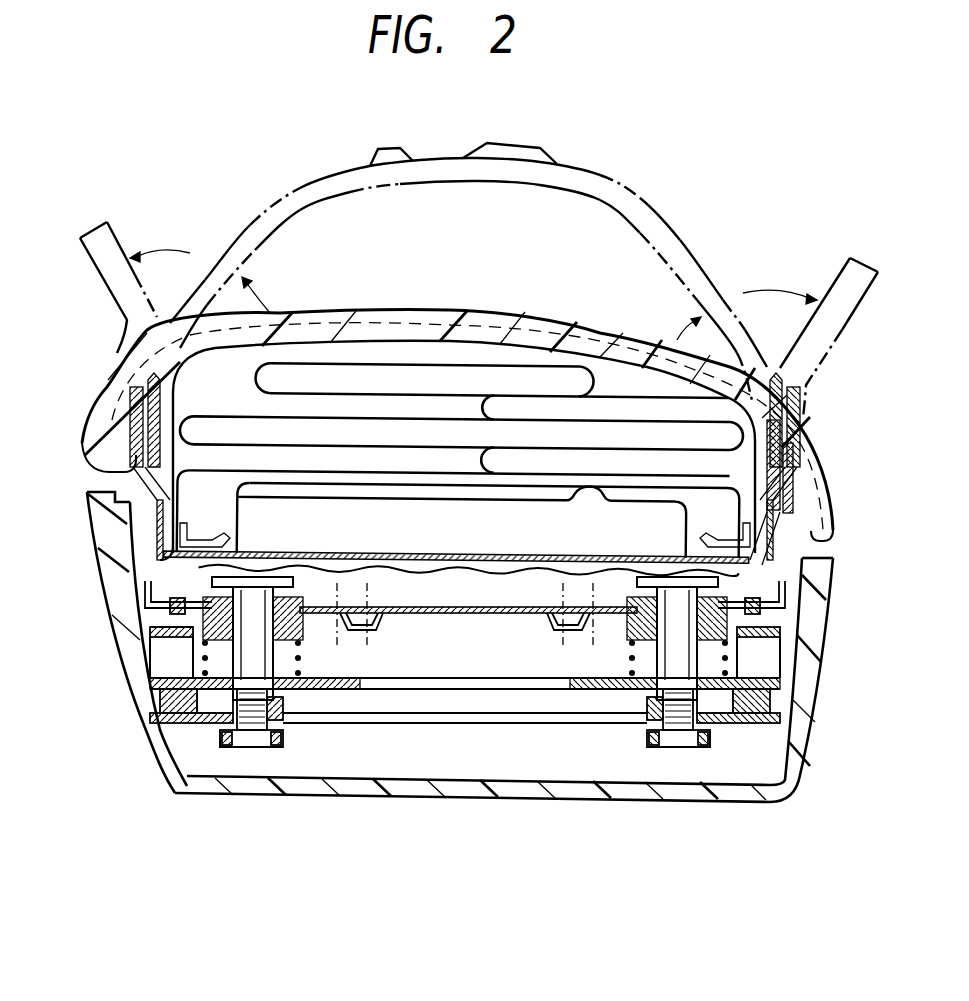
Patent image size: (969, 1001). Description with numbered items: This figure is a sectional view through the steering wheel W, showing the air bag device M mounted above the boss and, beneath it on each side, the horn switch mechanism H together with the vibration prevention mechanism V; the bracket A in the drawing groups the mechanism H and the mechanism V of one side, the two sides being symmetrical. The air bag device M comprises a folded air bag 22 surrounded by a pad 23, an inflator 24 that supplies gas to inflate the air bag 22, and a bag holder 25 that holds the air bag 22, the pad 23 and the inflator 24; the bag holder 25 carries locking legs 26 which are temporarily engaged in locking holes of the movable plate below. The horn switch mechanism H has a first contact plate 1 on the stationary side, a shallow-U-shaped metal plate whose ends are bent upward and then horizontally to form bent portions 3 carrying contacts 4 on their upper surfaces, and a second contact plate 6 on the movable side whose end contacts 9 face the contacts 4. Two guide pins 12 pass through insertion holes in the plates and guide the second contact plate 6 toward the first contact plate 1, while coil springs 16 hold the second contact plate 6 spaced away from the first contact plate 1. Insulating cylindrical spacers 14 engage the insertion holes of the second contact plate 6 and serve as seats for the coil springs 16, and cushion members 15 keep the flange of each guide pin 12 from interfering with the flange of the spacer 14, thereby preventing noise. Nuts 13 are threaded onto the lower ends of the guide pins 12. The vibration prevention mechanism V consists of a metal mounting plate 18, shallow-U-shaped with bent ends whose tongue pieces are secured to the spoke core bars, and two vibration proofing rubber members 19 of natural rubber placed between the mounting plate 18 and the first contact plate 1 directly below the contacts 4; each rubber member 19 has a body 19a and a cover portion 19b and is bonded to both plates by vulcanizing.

The steering wheel W is at (686, 195).
The air bag device M is at (603, 325).
The horn switch assembly A is at (112, 777).
The horn switch mechanism H is at (142, 623).
The vibration prevention mechanism V is at (145, 697).
The first contact plate 1 is at (436, 688).
The bent portions 3 is at (162, 657).
The contacts 4 is at (170, 632).
The second contact plate 6 is at (477, 615).
The contacts 9 is at (172, 602).
The guide pins 12 is at (258, 600).
The nuts 13 is at (280, 740).
The insulating cylindrical spacers 14 is at (300, 600).
The cushion members 15 is at (218, 590).
The coil springs 16 is at (312, 685).
The mounting plate 18 is at (444, 720).
The vibration proofing rubber members 19 is at (186, 723).
The body 19a is at (457, 647).
The cover portion 19b is at (294, 745).
The air bag 22 is at (398, 362).
The pad 23 is at (506, 320).
The inflator 24 is at (466, 515).
The bag holder 25 is at (396, 560).
The locking legs 26 is at (353, 640).